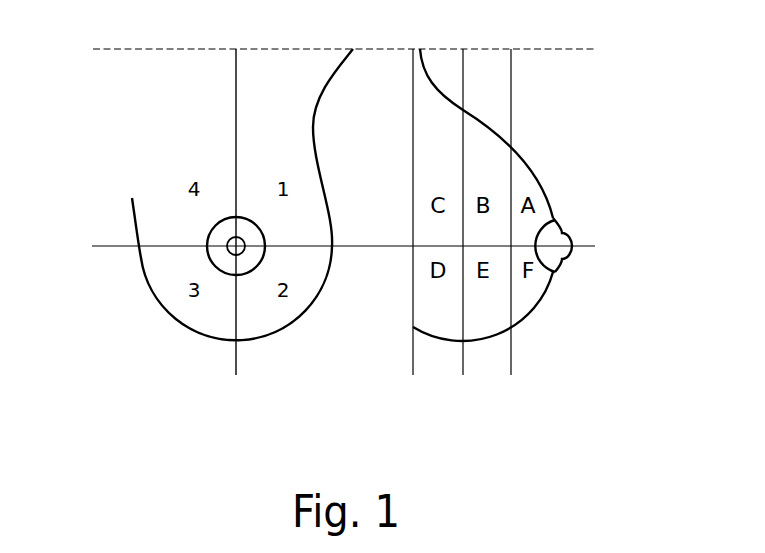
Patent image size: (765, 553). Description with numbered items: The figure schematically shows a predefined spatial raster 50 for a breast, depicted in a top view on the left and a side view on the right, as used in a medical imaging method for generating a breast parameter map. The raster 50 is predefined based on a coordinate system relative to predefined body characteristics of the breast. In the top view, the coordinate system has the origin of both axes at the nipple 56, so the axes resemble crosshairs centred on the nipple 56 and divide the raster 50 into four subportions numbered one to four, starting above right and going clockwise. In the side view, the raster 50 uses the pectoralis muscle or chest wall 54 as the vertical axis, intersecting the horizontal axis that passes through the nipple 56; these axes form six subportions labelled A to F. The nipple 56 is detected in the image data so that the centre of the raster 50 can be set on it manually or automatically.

The predefined spatial raster 50 is at (236, 76).
The pectoralis muscle/chest wall 54 is at (413, 328).
The nipple 56 is at (227, 246).